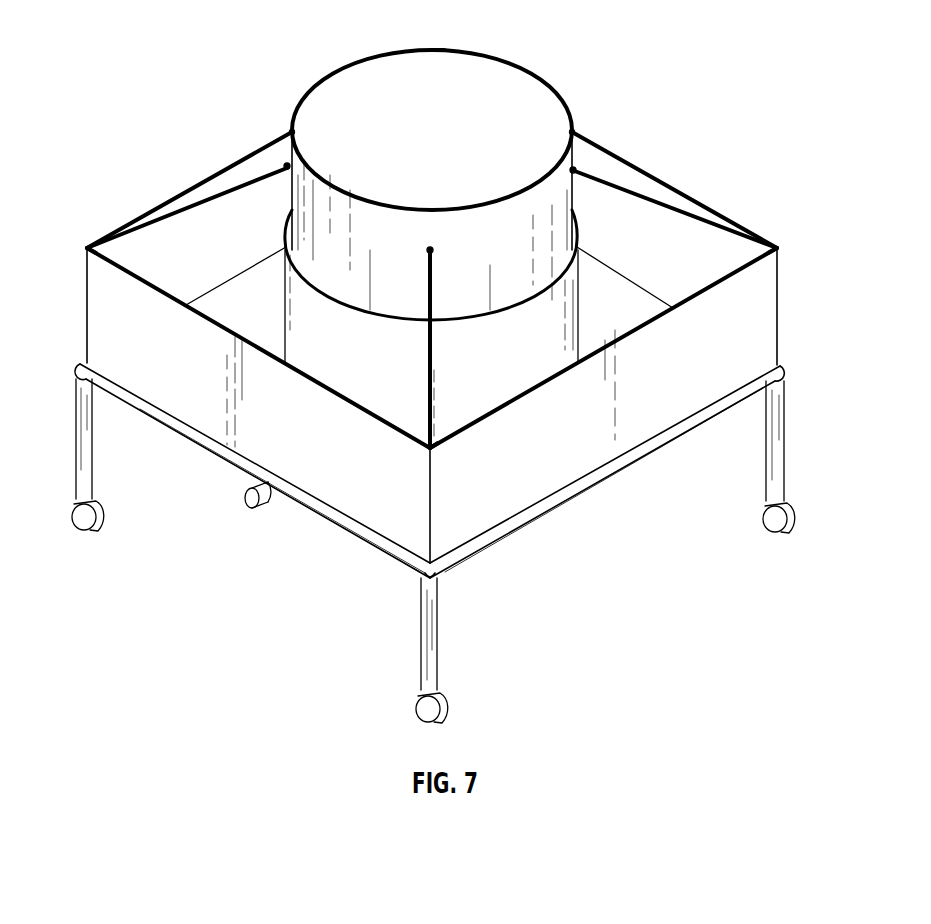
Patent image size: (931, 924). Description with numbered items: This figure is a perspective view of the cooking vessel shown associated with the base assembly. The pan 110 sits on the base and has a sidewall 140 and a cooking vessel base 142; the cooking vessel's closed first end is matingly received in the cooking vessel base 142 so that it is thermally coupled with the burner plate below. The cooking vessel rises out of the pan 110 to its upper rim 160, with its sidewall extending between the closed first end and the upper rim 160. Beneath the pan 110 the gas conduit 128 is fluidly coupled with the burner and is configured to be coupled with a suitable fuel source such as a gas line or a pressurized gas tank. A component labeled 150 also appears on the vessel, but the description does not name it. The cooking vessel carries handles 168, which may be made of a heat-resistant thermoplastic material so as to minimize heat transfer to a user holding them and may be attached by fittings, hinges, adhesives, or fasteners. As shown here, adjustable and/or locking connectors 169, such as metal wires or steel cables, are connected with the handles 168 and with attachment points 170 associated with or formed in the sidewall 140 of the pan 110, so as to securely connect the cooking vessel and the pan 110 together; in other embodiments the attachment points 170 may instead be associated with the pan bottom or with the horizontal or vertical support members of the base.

The pan 110 is at (667, 445).
The gas conduit 128 is at (246, 501).
The sidewall 140 is at (292, 128).
The cooking vessel base 142 is at (578, 287).
The collar 150 is at (573, 203).
The upper rim 160 is at (322, 80).
The handles 168 is at (287, 163).
The adjustable and/or locking connectors 169 is at (153, 227).
The attachment points 170 is at (87, 247).